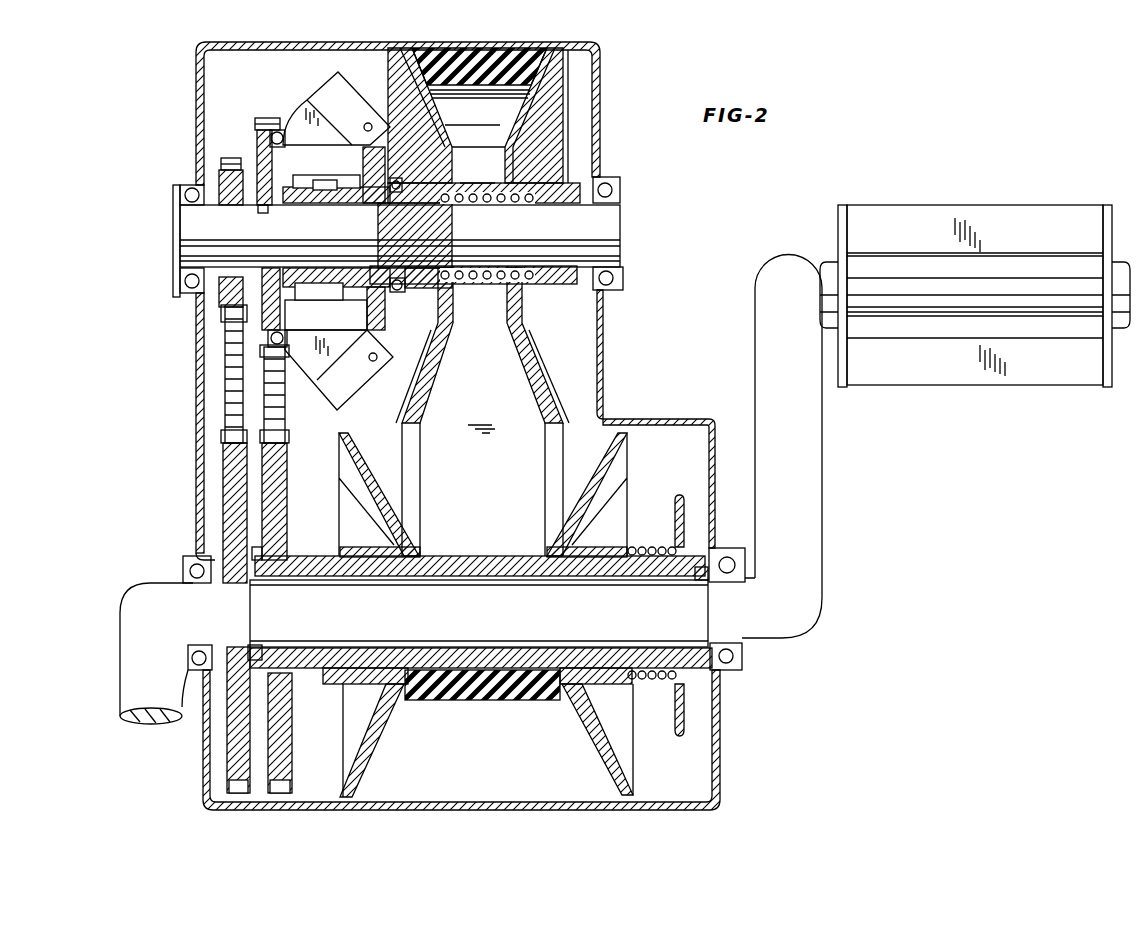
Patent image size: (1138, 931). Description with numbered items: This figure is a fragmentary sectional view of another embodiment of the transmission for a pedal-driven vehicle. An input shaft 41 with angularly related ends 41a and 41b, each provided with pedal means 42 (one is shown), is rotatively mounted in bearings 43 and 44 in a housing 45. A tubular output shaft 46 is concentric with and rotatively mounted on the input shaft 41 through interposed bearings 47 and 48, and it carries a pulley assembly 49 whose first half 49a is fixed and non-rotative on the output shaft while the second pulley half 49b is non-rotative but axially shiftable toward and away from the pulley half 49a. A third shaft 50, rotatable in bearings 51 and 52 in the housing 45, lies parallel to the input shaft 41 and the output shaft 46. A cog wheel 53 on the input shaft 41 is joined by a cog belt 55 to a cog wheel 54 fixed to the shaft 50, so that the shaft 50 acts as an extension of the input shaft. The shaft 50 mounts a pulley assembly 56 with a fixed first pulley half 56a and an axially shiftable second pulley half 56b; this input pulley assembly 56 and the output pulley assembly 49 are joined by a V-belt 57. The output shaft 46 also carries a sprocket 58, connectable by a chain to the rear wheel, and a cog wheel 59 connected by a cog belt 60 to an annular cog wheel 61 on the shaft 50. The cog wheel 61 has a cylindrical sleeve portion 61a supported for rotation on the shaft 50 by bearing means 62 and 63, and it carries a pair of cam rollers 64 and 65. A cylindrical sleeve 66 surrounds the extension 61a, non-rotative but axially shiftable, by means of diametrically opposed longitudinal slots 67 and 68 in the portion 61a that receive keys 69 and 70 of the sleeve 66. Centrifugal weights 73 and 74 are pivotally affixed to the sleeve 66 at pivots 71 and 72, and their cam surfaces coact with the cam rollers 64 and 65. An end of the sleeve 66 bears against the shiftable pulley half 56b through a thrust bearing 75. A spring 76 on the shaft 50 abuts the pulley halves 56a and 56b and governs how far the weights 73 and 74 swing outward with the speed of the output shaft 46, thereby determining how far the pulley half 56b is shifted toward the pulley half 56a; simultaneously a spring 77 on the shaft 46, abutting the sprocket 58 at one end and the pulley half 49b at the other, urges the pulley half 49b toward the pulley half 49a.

The input shaft 41 is at (508, 618).
The end of input shaft 41a is at (120, 682).
The end of input shaft 41b is at (828, 468).
The pedal means 42 is at (953, 382).
The bearing 43 is at (183, 566).
The bearing 44 is at (730, 550).
The housing 45 is at (603, 340).
The tubular output shaft 46 is at (490, 556).
The bearing 47 is at (255, 648).
The bearing 48 is at (697, 582).
The pulley assembly 49 is at (582, 741).
The first pulley half 49a is at (398, 752).
The second pulley half 49b is at (623, 477).
The third shaft 50 is at (178, 220).
The bearing 51 is at (184, 188).
The bearing 52 is at (623, 272).
The cog wheel 53 is at (223, 466).
The cog wheel 54 is at (200, 318).
The cog belt 55 is at (223, 392).
The pulley assembly 56 is at (475, 302).
The first pulley half 56a is at (520, 375).
The second pulley half 56b is at (440, 350).
The V-belt 57 is at (500, 700).
The sprocket 58 is at (677, 733).
The cog wheel 59 is at (280, 466).
The cog belt 60 is at (285, 420).
The annular cog wheel 61 is at (262, 120).
The cylindrical sleeve portion 61a is at (265, 213).
The bearing means 62 is at (252, 218).
The bearing means 63 is at (372, 210).
The cam roller 64 is at (281, 132).
The cam roller 65 is at (286, 342).
The cylindrical sleeve 66 is at (300, 175).
The longitudinal slot 67 is at (318, 205).
The longitudinal slot 68 is at (326, 315).
The key 69 is at (330, 180).
The key 70 is at (319, 306).
The pivot 71 is at (370, 123).
The pivot 72 is at (368, 363).
The centrifugal weight 73 is at (347, 88).
The centrifugal weight 74 is at (328, 402).
The thrust bearing 75 is at (402, 296).
The spring 76 is at (470, 283).
The spring 77 is at (658, 547).